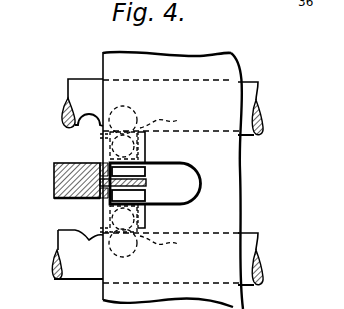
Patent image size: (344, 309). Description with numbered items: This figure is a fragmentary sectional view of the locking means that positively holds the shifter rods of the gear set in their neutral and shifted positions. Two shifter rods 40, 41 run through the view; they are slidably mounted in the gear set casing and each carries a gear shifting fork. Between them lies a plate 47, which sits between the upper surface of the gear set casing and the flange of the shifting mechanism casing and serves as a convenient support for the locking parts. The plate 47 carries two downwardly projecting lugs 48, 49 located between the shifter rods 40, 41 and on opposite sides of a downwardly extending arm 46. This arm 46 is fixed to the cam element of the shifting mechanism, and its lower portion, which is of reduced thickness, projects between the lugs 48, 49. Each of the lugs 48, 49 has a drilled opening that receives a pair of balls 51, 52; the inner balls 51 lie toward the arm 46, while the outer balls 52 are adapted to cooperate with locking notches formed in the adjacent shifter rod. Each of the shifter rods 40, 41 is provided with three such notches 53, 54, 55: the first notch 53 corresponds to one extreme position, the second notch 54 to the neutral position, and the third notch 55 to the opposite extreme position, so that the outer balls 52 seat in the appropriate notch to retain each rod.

The shifter rod 40 is at (263, 280).
The shifter rod 41 is at (263, 127).
The downwardly extending arm 46 is at (54, 181).
The plate 47 is at (235, 70).
The lug 48 is at (149, 143).
The lug 49 is at (147, 216).
The ball 51 is at (110, 160).
The outer ball 52 is at (108, 136).
The notch 53 is at (65, 110).
The notch 54 is at (118, 122).
The notch 55 is at (166, 123).